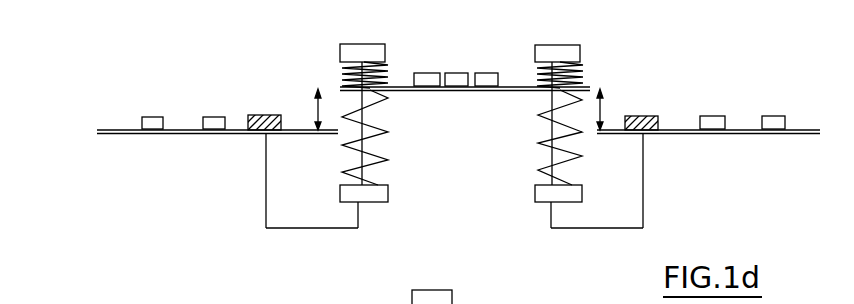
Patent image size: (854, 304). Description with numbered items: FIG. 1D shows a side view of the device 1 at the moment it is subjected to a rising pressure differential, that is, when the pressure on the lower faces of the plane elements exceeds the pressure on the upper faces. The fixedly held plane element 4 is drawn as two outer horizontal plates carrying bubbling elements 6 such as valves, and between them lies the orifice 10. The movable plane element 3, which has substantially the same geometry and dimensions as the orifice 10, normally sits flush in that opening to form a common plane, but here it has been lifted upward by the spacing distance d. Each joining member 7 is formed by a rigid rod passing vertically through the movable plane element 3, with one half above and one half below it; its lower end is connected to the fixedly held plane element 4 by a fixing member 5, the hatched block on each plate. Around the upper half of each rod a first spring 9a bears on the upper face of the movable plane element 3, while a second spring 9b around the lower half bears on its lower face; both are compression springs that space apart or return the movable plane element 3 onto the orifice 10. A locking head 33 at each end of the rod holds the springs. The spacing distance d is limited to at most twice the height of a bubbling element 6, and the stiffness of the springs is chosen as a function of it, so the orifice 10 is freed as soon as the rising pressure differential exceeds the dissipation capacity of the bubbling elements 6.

The device 1 is at (175, 62).
The movable plane element 3 is at (521, 104).
The fixedly held plane element 4 is at (139, 158).
The fixing member 5 is at (272, 115).
The bubbling element 6 is at (164, 117).
The joining member 7 is at (378, 44).
The first spring 9a is at (583, 72).
The second spring 9b is at (575, 168).
The orifice 10 is at (458, 135).
The locking head 33 is at (340, 68).
The spacing distance d is at (447, 109).